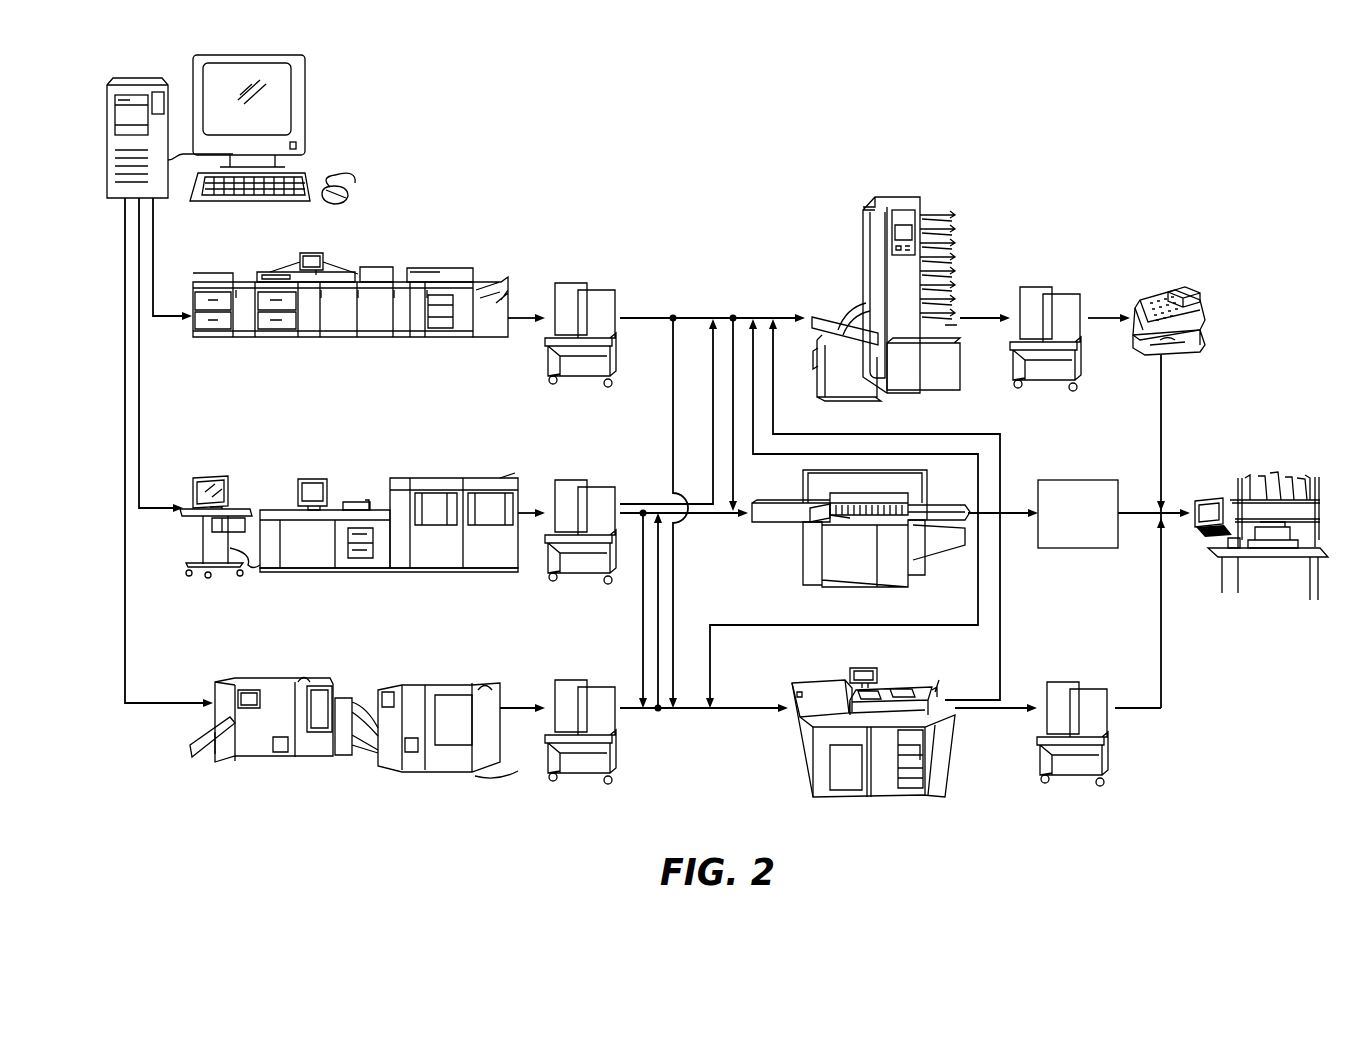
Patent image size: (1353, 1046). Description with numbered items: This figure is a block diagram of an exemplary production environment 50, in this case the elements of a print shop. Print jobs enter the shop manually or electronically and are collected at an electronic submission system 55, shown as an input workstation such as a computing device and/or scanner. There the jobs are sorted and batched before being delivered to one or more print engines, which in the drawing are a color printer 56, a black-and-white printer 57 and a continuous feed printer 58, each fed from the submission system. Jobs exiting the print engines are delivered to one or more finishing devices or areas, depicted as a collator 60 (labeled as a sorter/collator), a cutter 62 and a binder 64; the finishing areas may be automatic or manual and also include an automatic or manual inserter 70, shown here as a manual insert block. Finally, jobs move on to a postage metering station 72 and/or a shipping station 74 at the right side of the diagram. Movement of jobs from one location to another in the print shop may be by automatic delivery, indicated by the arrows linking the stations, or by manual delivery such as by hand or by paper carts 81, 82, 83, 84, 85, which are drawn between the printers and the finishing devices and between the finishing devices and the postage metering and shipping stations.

The production environment 50 is at (1097, 76).
The electronic submission system 55 is at (303, 108).
The color printer 56 is at (440, 273).
The black-and-white printer 57 is at (428, 478).
The continuous feed printer 58 is at (427, 690).
The collator 60 is at (863, 245).
The cutter 62 is at (803, 548).
The binder 64 is at (805, 738).
The inserter 70 is at (1078, 481).
The postage metering station 72 is at (1197, 290).
The shipping station 74 is at (1232, 500).
The paper cart 81 is at (586, 288).
The paper cart 82 is at (584, 483).
The paper cart 83 is at (598, 683).
The paper cart 84 is at (1047, 290).
The paper cart 85 is at (1067, 686).